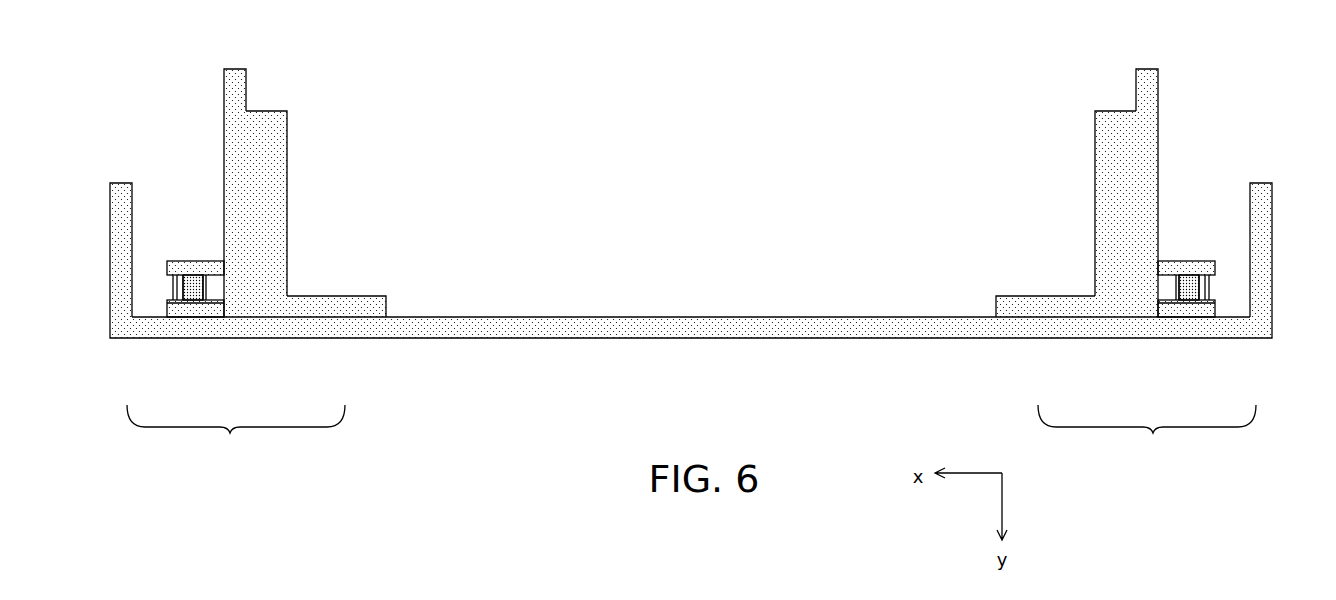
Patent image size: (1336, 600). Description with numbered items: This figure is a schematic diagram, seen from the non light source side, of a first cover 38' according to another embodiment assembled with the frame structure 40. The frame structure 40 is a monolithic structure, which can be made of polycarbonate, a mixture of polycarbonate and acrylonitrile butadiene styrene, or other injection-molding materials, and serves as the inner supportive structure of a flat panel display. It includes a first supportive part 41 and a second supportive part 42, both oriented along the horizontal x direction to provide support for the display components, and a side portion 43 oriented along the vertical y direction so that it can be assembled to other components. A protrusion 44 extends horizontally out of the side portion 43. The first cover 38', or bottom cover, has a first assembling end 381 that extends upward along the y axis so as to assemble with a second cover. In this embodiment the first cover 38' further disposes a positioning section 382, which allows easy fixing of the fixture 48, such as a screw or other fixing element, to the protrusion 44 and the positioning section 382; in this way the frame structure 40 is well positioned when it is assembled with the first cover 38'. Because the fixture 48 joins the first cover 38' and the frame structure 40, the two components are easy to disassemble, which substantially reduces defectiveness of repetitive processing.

The first cover 38' is at (691, 289).
The first assembling end 381 is at (121, 240).
The positioning section 382 is at (207, 261).
The frame structure 40 is at (691, 266).
The first supportive part 41 is at (343, 308).
The second supportive part 42 is at (261, 173).
The side portion 43 is at (233, 93).
The protrusion 44 is at (691, 342).
The fixture 48 is at (195, 292).